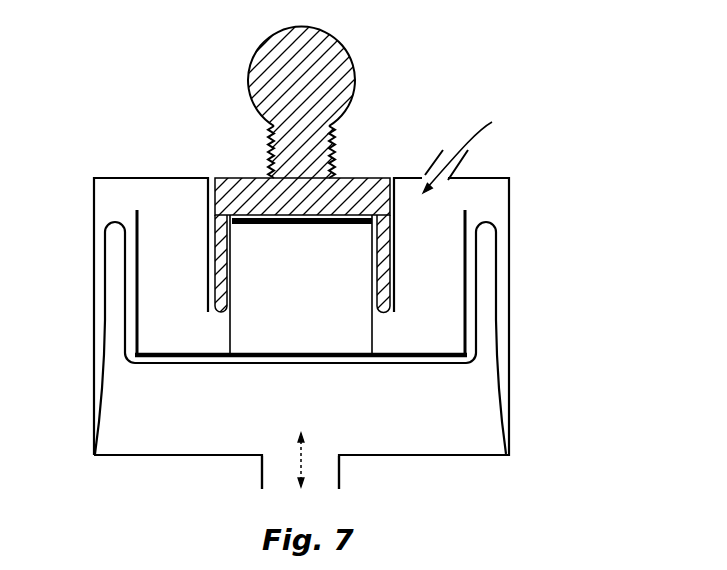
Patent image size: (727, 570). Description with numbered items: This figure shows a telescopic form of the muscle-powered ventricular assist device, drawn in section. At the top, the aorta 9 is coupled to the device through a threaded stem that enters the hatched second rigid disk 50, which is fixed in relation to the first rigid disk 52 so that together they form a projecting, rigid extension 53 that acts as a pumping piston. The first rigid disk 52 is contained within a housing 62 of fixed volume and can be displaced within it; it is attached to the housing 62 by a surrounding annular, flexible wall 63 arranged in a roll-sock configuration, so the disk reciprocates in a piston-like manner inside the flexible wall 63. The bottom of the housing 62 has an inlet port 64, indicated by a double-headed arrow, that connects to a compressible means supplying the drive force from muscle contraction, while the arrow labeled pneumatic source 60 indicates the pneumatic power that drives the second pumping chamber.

The aorta 9 is at (354, 70).
The second rigid disk 50 is at (328, 245).
The projecting rigid extension 53 is at (375, 332).
The first rigid disk 52 is at (432, 355).
The annular flexible wall 63 is at (498, 347).
The housing 62 is at (508, 397).
The inlet port 64 is at (327, 470).
The pneumatic source 60 is at (472, 145).